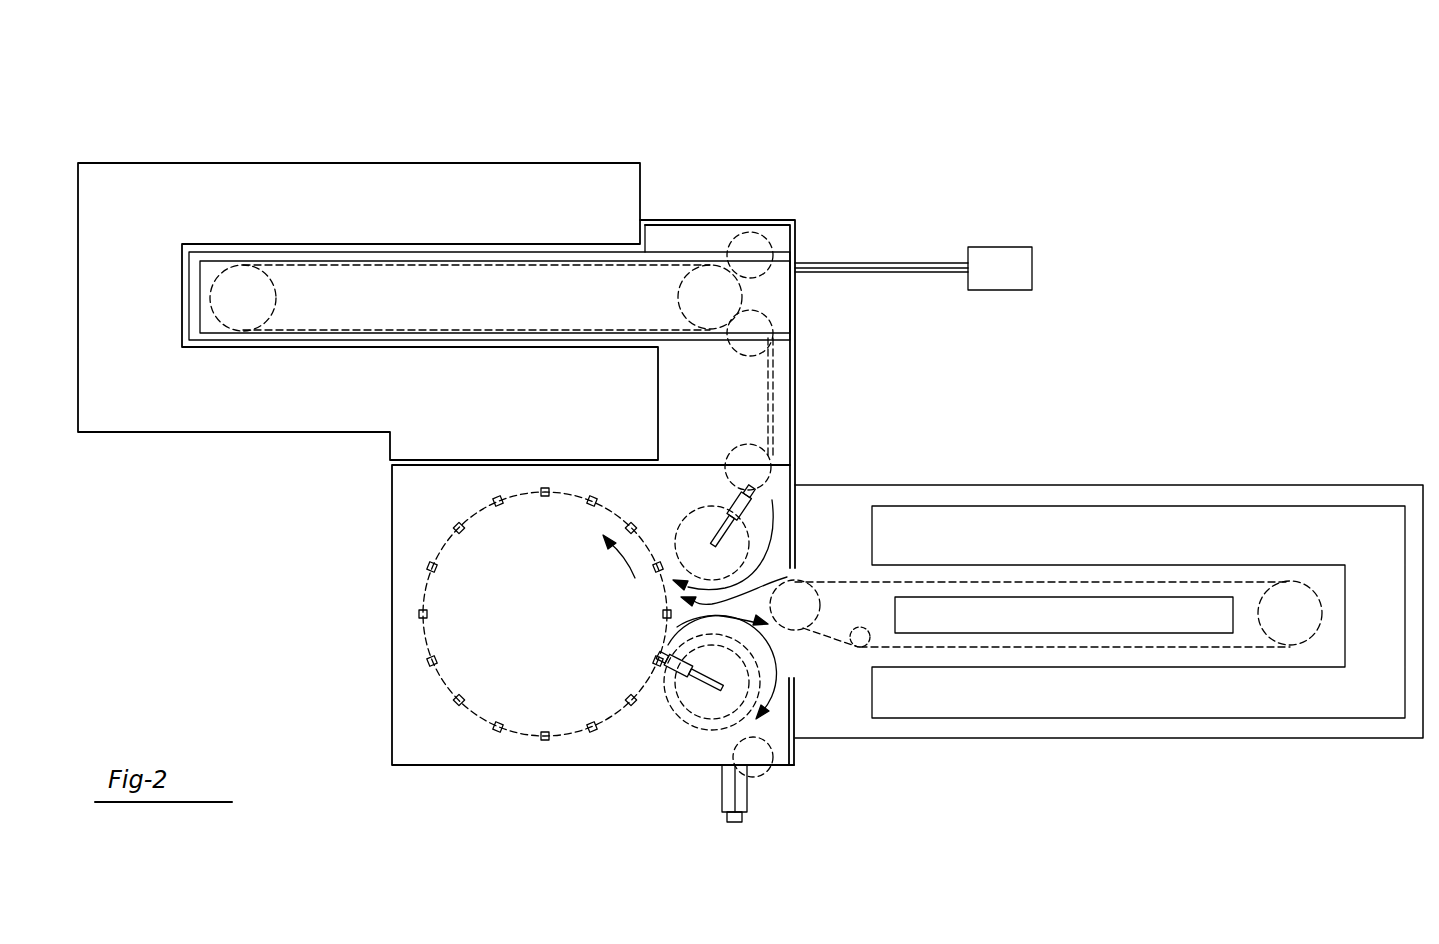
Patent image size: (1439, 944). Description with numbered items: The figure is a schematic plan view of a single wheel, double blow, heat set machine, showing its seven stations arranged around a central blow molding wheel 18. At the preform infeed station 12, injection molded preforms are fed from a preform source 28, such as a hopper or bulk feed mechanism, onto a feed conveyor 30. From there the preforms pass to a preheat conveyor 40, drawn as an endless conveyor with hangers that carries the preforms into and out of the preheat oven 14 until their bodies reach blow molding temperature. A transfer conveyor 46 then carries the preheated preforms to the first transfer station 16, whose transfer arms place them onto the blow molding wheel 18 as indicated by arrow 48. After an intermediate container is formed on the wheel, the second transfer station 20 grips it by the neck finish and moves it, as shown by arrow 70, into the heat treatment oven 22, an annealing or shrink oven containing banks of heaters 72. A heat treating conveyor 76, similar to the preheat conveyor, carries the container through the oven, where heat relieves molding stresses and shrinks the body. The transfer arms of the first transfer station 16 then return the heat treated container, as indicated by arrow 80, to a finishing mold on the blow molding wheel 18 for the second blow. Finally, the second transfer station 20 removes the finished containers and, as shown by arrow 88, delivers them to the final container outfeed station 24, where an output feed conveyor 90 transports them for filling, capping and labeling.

The preform infeed station 12 is at (847, 279).
The preheat oven 14 is at (380, 183).
The first transfer station 16 is at (762, 518).
The blow molding wheel 18 is at (554, 672).
The second transfer station 20 is at (695, 712).
The heat treatment oven 22 is at (1240, 477).
The final container outfeed station 24 is at (757, 792).
The preform source 28 is at (1000, 282).
The feed conveyor 30 is at (910, 270).
The preheat conveyor 40 is at (570, 272).
The transfer conveyor 46 is at (773, 387).
The arrow 48 is at (745, 543).
The arrow 70 is at (678, 626).
The banks of heaters 72 is at (1118, 612).
The heat treating conveyor 76 is at (1247, 580).
The arrow 80 is at (707, 604).
The arrow 88 is at (780, 697).
The output feed conveyor 90 is at (743, 819).